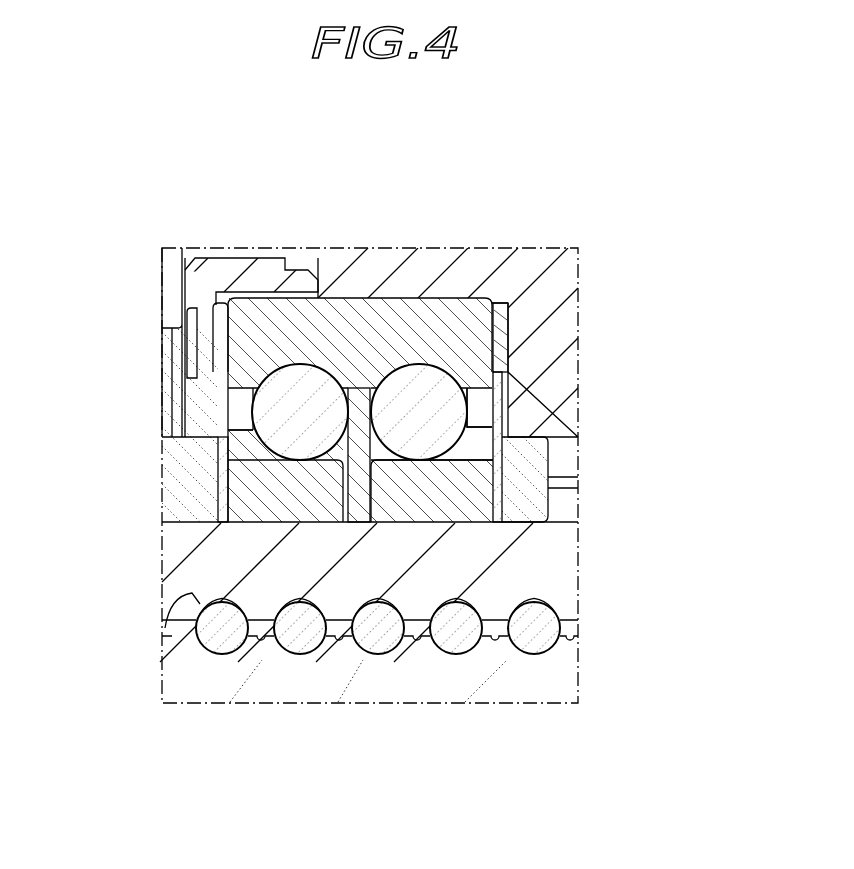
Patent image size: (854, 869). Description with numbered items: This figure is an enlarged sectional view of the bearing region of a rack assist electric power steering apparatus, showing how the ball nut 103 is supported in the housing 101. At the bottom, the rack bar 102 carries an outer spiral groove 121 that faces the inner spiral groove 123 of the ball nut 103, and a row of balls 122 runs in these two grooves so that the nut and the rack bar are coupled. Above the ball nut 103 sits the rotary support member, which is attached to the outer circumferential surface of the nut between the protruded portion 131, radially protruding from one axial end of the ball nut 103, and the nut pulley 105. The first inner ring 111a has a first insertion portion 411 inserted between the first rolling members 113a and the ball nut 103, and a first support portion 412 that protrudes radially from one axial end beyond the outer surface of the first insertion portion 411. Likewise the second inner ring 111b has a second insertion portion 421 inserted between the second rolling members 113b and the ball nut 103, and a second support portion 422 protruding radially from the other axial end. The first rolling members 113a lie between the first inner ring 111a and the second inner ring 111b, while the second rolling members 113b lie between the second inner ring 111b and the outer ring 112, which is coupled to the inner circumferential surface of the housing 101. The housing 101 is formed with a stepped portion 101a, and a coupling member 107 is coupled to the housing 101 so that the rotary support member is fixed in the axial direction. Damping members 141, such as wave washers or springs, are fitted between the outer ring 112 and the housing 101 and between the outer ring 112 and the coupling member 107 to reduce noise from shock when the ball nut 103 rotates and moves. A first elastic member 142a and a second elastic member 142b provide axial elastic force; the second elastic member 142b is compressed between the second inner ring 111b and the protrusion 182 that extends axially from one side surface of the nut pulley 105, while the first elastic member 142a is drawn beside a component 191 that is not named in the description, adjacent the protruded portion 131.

The housing 101 is at (552, 263).
The stepped portion 101a is at (420, 320).
The coupling member 107 is at (227, 261).
The outer ring 112 is at (272, 310).
The first rolling members 113a is at (433, 378).
The second rolling members 113b is at (303, 375).
The damping members 141 is at (218, 343).
The first elastic member 142a is at (500, 482).
The second elastic member 142b is at (212, 482).
The first inner ring 111a is at (647, 350).
The second inner ring 111b is at (87, 325).
The first insertion portion 411 is at (477, 433).
The first support portion 412 is at (470, 400).
The second insertion portion 421 is at (233, 432).
The second support portion 422 is at (322, 483).
The end block 191 is at (535, 455).
The protruded portion 131 is at (565, 483).
The nut pulley 105 is at (117, 385).
The protrusion 182 is at (175, 500).
The ball nut 103 is at (197, 557).
The inner spiral groove 123 is at (183, 598).
The balls 122 is at (215, 630).
The outer spiral groove 121 is at (220, 655).
The rack bar 102 is at (298, 698).